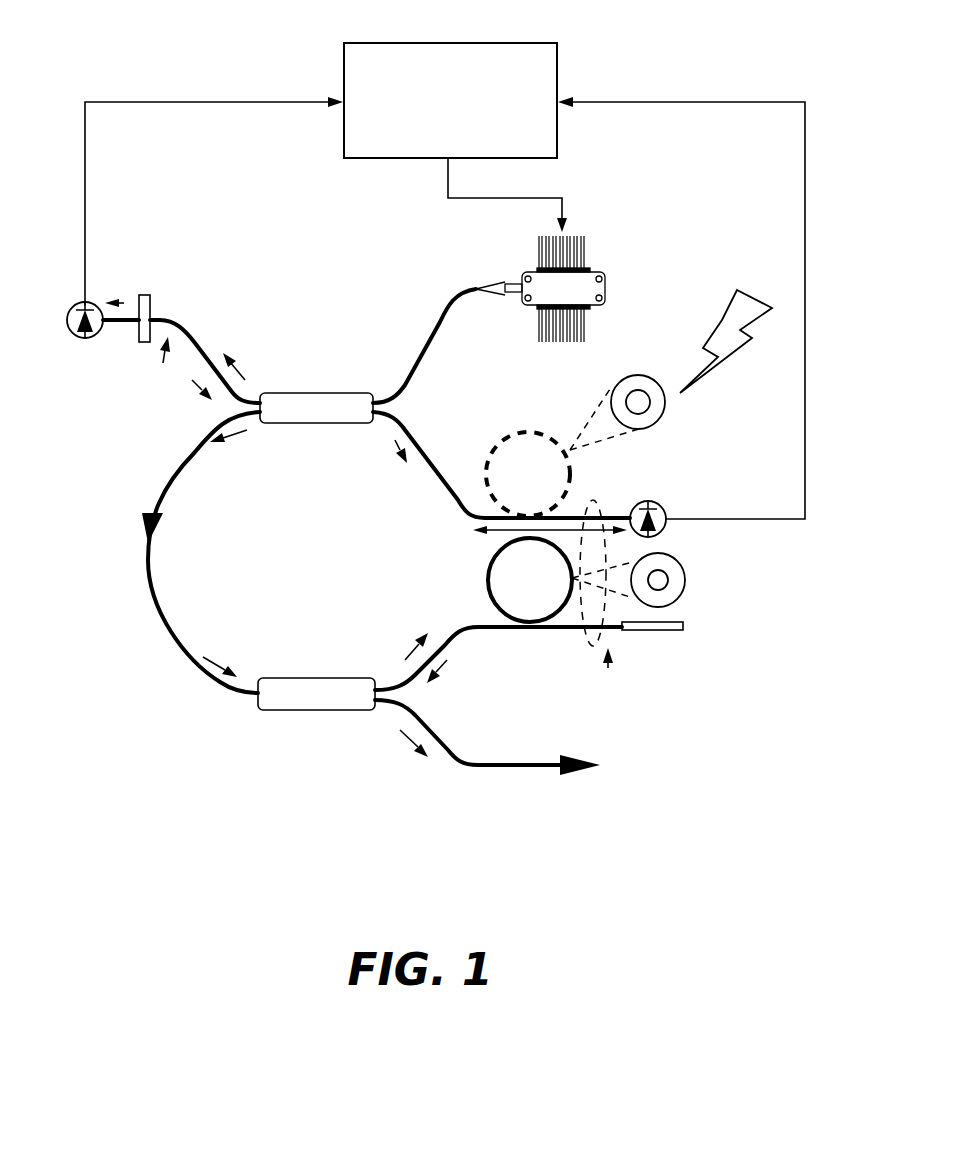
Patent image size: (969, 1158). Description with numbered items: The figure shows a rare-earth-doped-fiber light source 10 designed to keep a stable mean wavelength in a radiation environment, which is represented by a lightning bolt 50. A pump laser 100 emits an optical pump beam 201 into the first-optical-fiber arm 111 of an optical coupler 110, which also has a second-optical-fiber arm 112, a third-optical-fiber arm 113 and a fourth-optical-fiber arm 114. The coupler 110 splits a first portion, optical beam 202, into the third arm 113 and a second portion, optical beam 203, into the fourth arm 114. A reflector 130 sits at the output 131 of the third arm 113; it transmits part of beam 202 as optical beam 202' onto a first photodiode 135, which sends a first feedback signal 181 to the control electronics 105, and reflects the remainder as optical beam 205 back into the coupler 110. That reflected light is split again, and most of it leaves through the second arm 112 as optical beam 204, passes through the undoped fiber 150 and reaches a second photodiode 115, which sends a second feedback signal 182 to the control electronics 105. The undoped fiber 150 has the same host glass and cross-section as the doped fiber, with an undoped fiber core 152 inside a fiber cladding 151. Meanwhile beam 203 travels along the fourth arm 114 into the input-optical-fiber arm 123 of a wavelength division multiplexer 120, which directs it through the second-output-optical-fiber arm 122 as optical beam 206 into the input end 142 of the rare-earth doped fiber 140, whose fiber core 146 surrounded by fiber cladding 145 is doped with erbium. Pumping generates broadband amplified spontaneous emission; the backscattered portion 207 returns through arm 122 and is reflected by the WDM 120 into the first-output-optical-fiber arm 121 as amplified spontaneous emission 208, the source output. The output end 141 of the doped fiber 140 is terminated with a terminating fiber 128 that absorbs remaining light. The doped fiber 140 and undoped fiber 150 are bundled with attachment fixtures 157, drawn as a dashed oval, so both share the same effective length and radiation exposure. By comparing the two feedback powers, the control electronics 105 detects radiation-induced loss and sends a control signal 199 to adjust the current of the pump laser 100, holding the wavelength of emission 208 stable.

The rare-earth-doped-fiber light source 10 is at (301, 799).
The lightning bolt 50 is at (723, 310).
The pump laser 100 is at (600, 272).
The control electronics 105 is at (488, 43).
The optical coupler 110 is at (305, 393).
The first-optical-fiber arm 111 is at (443, 328).
The second-optical-fiber arm 112 is at (435, 475).
The third-optical-fiber arm 113 is at (200, 345).
The fourth-optical-fiber arm 114 is at (150, 492).
The second photodiode 115 is at (638, 500).
The wavelength division multiplexer 120 is at (323, 678).
The first-output-optical-fiber arm 121 is at (455, 752).
The second-output-optical-fiber arm 122 is at (452, 637).
The input-optical-fiber arm 123 is at (210, 680).
The terminating fiber 128 is at (647, 632).
The reflector 130 is at (152, 310).
The output of the third arm 131 is at (166, 355).
The first photodiode 135 is at (67, 307).
The rare-earth doped fiber 140 is at (488, 580).
The output end 141 is at (608, 668).
The input end 142 is at (465, 603).
The fiber cladding 145 is at (684, 572).
The fiber core 146 is at (668, 582).
The undoped fiber 150 is at (520, 432).
The fiber cladding 151 is at (648, 377).
The undoped fiber core 152 is at (640, 430).
The attachment fixtures 157 is at (587, 633).
The first feedback signal 181 is at (178, 87).
The second feedback signal 182 is at (817, 326).
The control signal 199 is at (448, 173).
The optical pump beam 201 is at (436, 292).
The optical beam 202 is at (250, 350).
The optical beam 202' is at (146, 269).
The optical beam 203 is at (247, 430).
The optical beam 204 is at (396, 442).
The optical beam 205 is at (192, 380).
The optical beam 206 is at (408, 657).
The amplified spontaneous emission 207 is at (448, 665).
The amplified spontaneous emission 208 is at (402, 733).